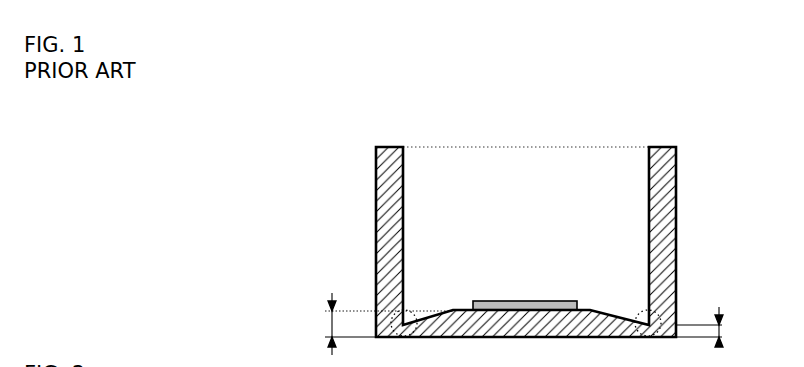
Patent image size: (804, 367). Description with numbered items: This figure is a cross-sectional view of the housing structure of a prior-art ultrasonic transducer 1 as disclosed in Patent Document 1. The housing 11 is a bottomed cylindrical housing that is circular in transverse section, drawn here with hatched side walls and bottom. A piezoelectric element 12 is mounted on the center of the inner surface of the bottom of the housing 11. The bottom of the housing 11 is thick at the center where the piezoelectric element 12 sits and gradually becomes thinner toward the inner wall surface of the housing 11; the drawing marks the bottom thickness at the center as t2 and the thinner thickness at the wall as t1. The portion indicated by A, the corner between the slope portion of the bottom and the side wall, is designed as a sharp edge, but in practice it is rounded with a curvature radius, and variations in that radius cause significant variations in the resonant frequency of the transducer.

The ultrasonic transducer 1 is at (722, 102).
The housing 11 is at (676, 213).
The piezoelectric element 12 is at (521, 300).
The corner portion A is at (412, 312).
The bottom thickness at corner t1 is at (711, 327).
The bottom thickness at center t2 is at (378, 324).